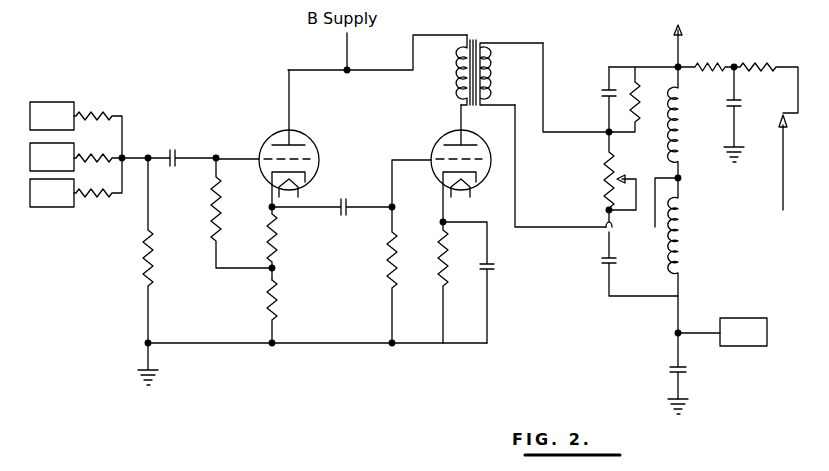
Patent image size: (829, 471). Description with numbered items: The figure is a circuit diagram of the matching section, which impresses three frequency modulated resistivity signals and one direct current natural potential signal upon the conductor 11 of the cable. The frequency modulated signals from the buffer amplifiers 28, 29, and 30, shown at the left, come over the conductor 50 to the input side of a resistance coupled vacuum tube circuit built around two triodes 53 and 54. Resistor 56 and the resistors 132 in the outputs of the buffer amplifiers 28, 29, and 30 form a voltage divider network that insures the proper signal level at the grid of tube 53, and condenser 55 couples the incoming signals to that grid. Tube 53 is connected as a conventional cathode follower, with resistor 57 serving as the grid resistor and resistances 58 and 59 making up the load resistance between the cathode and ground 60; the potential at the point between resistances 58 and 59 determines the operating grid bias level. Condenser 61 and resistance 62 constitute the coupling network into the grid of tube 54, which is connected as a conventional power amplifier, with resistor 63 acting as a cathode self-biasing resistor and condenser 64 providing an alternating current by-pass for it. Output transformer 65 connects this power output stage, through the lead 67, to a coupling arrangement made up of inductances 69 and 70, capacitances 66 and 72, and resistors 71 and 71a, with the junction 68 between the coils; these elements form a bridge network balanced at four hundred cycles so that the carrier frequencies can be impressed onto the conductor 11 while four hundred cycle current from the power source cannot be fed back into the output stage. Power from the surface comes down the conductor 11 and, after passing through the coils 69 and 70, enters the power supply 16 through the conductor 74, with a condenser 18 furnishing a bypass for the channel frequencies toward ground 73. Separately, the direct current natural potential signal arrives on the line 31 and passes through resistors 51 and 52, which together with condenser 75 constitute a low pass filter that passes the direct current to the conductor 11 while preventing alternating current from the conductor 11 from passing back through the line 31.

The buffer amplifier 28 is at (52, 116).
The buffer amplifier 29 is at (52, 157).
The buffer amplifier 30 is at (52, 193).
The resistors 132 is at (98, 112).
The conductor 50 is at (130, 158).
The condenser 55 is at (177, 157).
The resistor 56 is at (146, 260).
The resistor 57 is at (209, 214).
The triode 53 is at (273, 134).
The resistance 58 is at (284, 244).
The resistance 59 is at (268, 304).
The condenser 61 is at (355, 203).
The resistance 62 is at (390, 264).
The ground 60 is at (158, 375).
The triode 54 is at (443, 136).
The resistor 63 is at (440, 264).
The condenser 64 is at (489, 265).
The output transformer 65 is at (476, 44).
The secondary winding lead 67 is at (516, 155).
The capacitance 66 is at (607, 92).
The resistor 71a is at (637, 102).
The conductor 11 is at (676, 42).
The inductance 69 is at (673, 120).
The tap point 68 is at (684, 179).
The inductance 70 is at (685, 234).
The resistor 71 is at (604, 179).
The capacitance 72 is at (598, 261).
The conductor 74 is at (698, 331).
The power supply 16 is at (743, 332).
The condenser 18 is at (684, 373).
The ground 73 is at (687, 406).
The resistor 52 is at (711, 63).
The resistor 51 is at (773, 63).
The condenser 75 is at (744, 99).
The conductor 31 is at (782, 192).